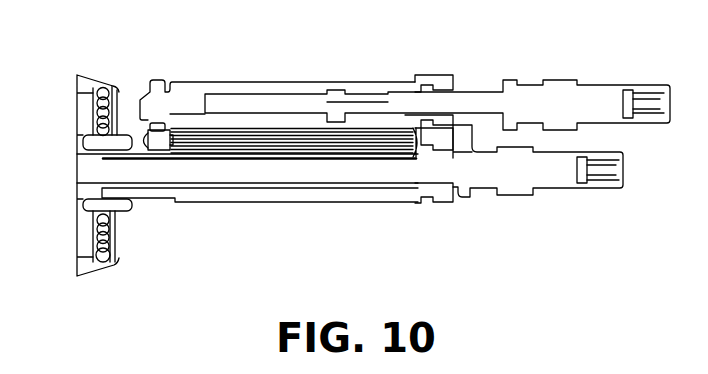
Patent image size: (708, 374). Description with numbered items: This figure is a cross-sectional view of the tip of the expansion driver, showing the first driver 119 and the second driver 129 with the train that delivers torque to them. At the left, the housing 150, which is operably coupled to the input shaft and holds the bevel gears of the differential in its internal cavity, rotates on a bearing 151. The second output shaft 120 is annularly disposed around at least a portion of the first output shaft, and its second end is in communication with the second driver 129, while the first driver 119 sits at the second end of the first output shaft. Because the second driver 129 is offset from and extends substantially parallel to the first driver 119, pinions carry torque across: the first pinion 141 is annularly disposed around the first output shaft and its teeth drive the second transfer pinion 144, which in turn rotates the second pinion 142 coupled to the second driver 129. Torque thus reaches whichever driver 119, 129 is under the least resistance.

The housing 150 is at (105, 85).
The bearing 151 is at (109, 97).
The second output shaft 120 is at (110, 142).
The second pinion 142 is at (305, 83).
The second driver 129 is at (597, 98).
The second transfer pinion 144 is at (235, 147).
The first pinion 141 is at (286, 203).
The first driver 119 is at (568, 172).